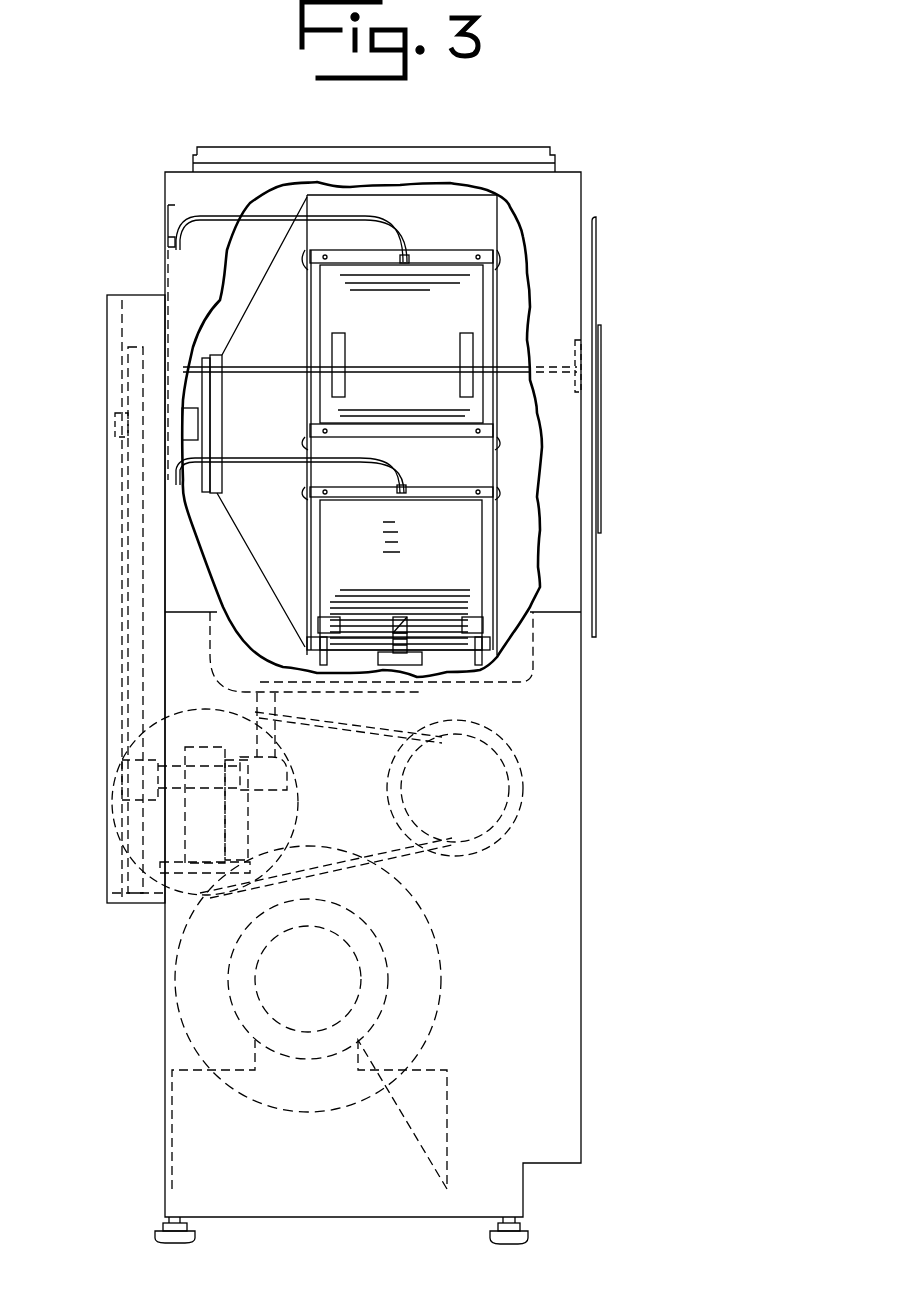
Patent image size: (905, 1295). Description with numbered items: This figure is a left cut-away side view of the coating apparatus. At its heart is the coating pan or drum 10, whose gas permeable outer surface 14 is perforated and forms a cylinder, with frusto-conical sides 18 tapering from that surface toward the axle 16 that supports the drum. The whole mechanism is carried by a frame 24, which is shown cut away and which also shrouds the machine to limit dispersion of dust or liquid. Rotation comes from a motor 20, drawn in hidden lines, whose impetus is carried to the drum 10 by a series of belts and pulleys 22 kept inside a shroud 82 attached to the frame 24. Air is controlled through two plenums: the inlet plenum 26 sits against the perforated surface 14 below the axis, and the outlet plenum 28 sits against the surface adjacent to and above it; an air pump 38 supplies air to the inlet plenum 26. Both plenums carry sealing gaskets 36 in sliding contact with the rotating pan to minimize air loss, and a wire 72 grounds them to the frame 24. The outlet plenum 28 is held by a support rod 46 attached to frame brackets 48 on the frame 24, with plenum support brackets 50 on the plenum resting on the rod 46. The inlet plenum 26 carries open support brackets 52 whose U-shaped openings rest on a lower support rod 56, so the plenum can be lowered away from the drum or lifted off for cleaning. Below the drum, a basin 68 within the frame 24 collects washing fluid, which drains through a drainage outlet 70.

The coating pan or drum 10 is at (255, 287).
The gas permeable outer surface 14 is at (475, 212).
The axle 16 is at (107, 438).
The frusto-conical sides 18 is at (250, 523).
The motor 20 is at (520, 762).
The belts and pulleys 22 is at (122, 655).
The frame 24 is at (576, 696).
The inlet plenum 26 is at (470, 548).
The outlet plenum 28 is at (337, 305).
The sealing gaskets 36 is at (462, 252).
The air pump 38 is at (440, 942).
The support rod 46 is at (283, 374).
The frame brackets 48 is at (183, 367).
The plenum support brackets 50 is at (460, 348).
The open support brackets 52 is at (300, 657).
The lower support rod 56 is at (446, 660).
The basin 68 is at (220, 623).
The drainage outlet 70 is at (282, 740).
The wire 72 is at (383, 218).
The shroud 82 is at (110, 320).